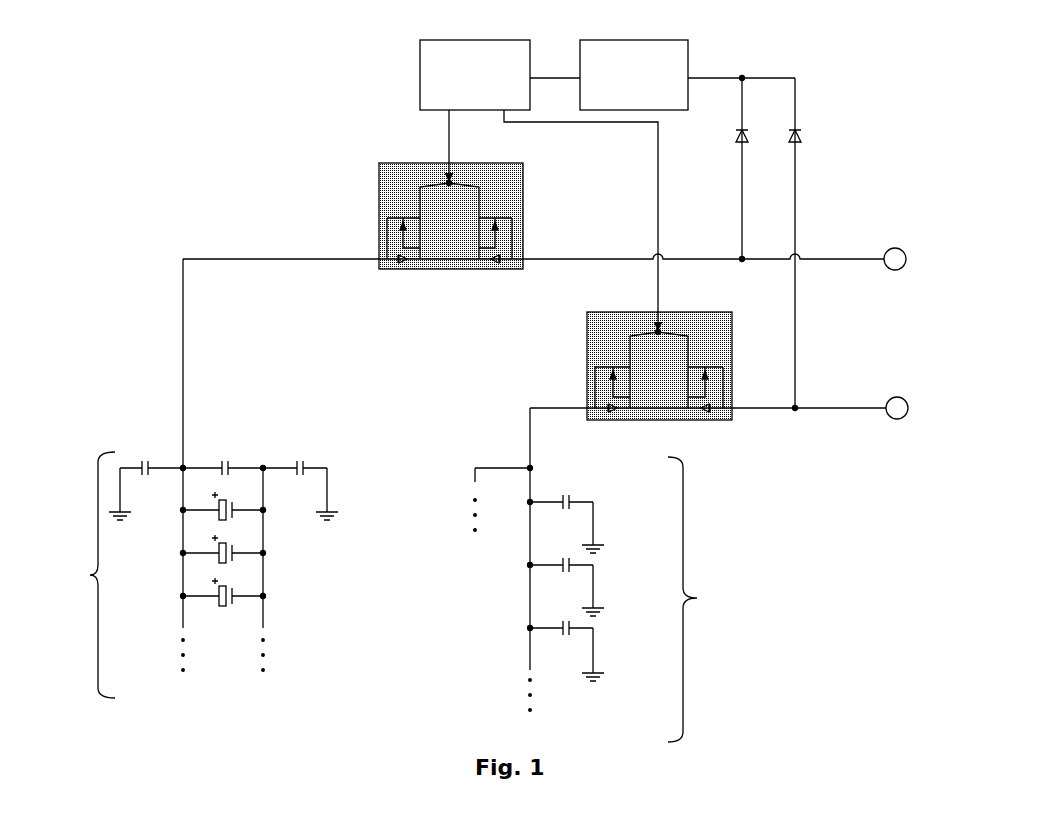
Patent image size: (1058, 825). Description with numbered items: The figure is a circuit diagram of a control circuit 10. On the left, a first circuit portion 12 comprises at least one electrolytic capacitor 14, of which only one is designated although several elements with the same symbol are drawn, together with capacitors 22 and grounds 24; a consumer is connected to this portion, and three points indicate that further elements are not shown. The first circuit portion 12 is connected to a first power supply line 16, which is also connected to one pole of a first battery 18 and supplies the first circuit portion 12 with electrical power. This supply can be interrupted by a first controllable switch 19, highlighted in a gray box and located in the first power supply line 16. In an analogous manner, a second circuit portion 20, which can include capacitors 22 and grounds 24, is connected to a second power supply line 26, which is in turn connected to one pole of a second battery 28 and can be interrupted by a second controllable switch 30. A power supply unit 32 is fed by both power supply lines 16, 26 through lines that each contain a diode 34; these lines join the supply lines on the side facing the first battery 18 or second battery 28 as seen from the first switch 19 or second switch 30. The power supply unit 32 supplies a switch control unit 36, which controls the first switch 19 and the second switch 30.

The control circuit 10 is at (177, 107).
The first circuit portion 12 is at (198, 575).
The electrolytic capacitor 14 is at (237, 601).
The first power supply line 16 is at (220, 259).
The first battery 18 is at (895, 248).
The first controllable switch 19 is at (379, 175).
The second circuit portion 20 is at (603, 599).
The capacitors 22 is at (593, 500).
The grounds 24 is at (604, 545).
The second power supply line 26 is at (528, 410).
The second battery 28 is at (897, 420).
The second controllable switch 30 is at (684, 420).
The power supply unit 32 is at (688, 58).
The diode 34 is at (797, 136).
The switch control unit 36 is at (420, 92).